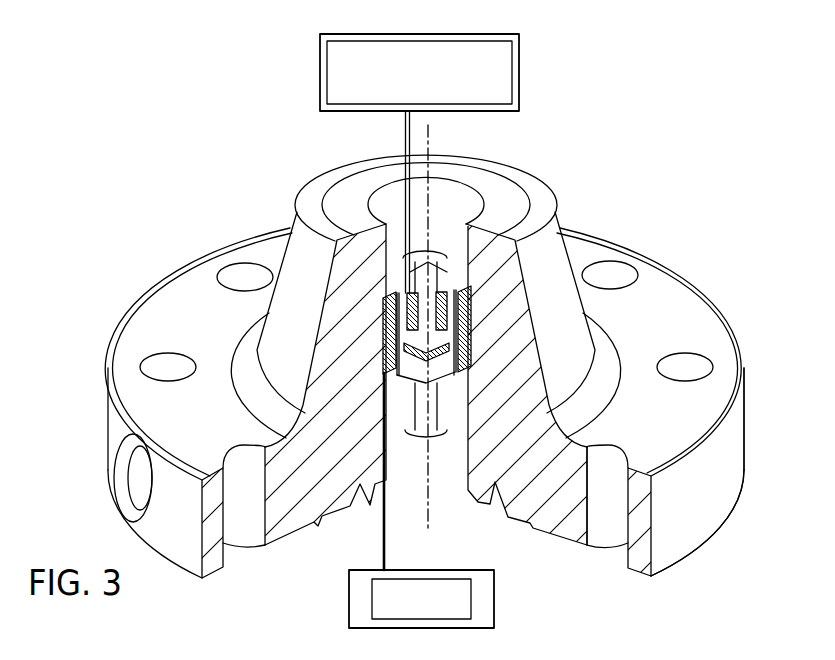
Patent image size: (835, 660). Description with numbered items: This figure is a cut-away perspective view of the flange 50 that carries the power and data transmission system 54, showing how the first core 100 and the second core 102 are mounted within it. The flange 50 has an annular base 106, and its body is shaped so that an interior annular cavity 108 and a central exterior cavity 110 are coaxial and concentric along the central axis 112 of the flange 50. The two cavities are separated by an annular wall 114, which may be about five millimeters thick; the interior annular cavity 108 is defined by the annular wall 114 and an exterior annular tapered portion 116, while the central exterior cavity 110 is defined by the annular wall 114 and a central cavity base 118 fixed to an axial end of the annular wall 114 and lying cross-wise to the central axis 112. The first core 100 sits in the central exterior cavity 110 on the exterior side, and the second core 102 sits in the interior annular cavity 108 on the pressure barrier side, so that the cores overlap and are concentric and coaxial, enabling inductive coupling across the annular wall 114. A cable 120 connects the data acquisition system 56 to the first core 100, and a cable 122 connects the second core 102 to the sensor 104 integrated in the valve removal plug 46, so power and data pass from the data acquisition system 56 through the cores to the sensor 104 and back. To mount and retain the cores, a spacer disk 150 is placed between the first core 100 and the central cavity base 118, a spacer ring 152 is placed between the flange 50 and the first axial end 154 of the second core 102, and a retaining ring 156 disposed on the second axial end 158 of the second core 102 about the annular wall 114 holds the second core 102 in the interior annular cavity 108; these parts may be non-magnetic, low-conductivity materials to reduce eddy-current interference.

The valve removal plug 46 is at (349, 590).
The flange 50 is at (700, 290).
The power and data transmission system 54 is at (597, 108).
The data acquisition system 56 is at (320, 72).
The first core 100 is at (433, 288).
The second core 102 is at (450, 342).
The sensor 104 is at (472, 596).
The base 106 is at (710, 503).
The interior annular cavity 108 is at (470, 337).
The central exterior cavity 110 is at (438, 243).
The central axis 112 is at (428, 466).
The annular wall 114 is at (407, 317).
The exterior annular tapered portion 116 is at (340, 378).
The central cavity base 118 is at (438, 432).
The cable 120 is at (405, 139).
The cable 122 is at (383, 536).
The spacer disk 150 is at (430, 365).
The spacer ring 152 is at (392, 300).
The first axial end 154 is at (466, 305).
The retaining ring 156 is at (455, 362).
The second axial end 158 is at (470, 352).